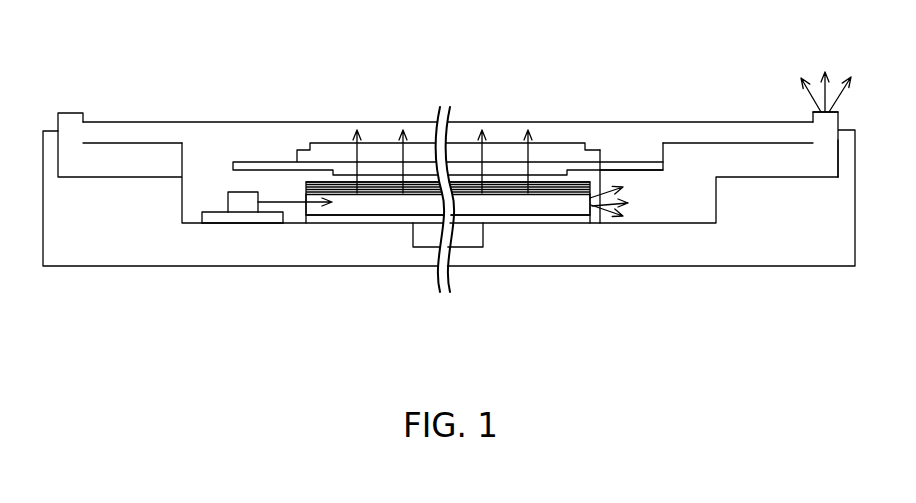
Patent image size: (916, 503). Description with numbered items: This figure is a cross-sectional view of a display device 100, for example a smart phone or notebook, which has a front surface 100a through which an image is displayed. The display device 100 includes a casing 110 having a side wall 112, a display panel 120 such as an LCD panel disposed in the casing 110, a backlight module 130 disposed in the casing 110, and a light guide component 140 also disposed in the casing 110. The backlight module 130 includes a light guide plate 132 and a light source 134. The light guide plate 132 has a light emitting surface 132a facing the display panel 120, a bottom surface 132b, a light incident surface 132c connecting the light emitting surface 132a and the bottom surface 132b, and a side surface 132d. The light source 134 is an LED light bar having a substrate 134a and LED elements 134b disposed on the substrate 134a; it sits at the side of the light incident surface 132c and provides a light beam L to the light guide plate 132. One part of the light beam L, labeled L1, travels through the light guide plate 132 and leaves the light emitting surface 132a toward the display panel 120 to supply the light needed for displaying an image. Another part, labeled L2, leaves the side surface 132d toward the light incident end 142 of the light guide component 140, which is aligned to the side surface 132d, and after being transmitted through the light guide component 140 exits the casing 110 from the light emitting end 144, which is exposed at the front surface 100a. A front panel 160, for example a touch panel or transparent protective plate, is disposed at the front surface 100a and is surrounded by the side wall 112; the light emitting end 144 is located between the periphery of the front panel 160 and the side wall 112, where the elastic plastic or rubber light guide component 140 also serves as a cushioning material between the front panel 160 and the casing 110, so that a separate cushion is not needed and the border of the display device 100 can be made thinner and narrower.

The display device 100 is at (890, 333).
The front surface 100a is at (552, 87).
The casing 110 is at (830, 229).
The side wall 112 is at (845, 158).
The display panel 120 is at (304, 160).
The backlight module 130 is at (320, 335).
The light guide plate 132 is at (362, 207).
The light emitting surface 132a is at (502, 182).
The bottom surface 132b is at (522, 228).
The light incident surface 132c is at (296, 209).
The side surface 132d is at (602, 211).
The light source 134 is at (274, 244).
The substrate 134a is at (220, 220).
The LED elements 134b is at (245, 203).
The light guide component 140 is at (742, 157).
The light incident end 142 is at (611, 172).
The light emitting end 144 is at (826, 126).
The front panel 160 is at (698, 132).
The light beam L is at (275, 200).
The part of the light beam L1 is at (403, 157).
The another part of the light beam L2 is at (807, 98).